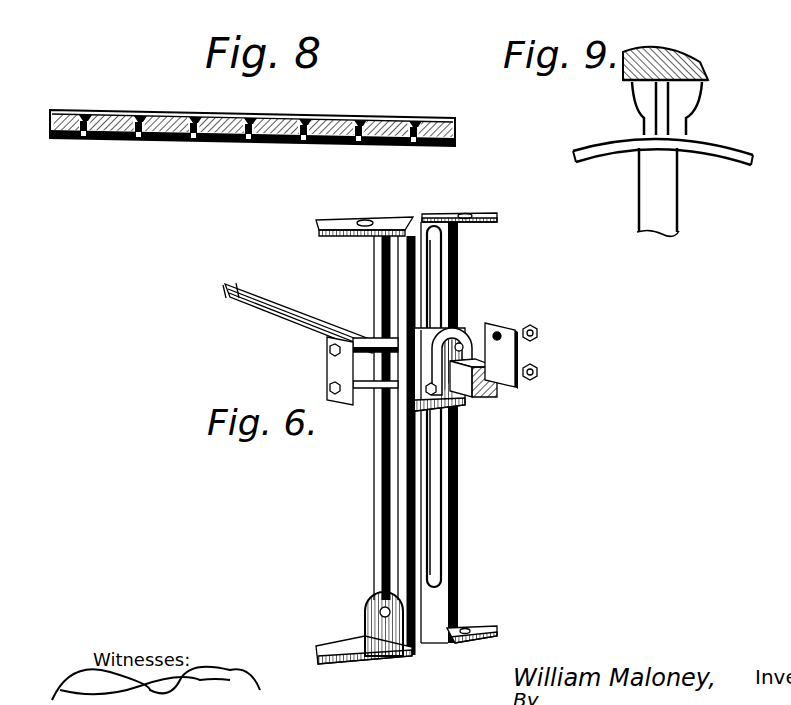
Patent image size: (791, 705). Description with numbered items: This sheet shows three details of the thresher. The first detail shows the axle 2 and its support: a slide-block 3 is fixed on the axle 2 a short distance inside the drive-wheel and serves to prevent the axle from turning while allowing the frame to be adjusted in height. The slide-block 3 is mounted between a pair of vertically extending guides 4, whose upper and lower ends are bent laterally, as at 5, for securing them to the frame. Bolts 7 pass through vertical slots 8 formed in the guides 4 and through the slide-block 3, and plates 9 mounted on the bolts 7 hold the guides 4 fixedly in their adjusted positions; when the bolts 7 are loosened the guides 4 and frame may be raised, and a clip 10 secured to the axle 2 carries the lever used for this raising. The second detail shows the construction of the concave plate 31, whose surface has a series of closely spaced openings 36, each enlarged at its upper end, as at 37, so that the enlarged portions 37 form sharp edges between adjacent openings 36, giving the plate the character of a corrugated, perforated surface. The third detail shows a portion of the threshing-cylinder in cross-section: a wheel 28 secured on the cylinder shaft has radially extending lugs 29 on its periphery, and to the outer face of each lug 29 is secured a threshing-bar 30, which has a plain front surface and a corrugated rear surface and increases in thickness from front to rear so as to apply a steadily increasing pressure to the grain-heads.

In FIG. 6, the axle 2 is at (490, 390).
In FIG. 6, the slide-block 3 is at (428, 330).
In FIG. 6, the guides 4 is at (383, 268).
In FIG. 6, the laterally bent ends 5 is at (380, 218).
In FIG. 6, the bolts 7 is at (368, 328).
In FIG. 6, the vertical slots 8 is at (390, 519).
In FIG. 6, the plates 9 is at (337, 365).
In FIG. 6, the clip 10 is at (470, 335).
In FIG. 9, the wheels 28 is at (658, 166).
In FIG. 9, the radially-extending lugs 29 is at (676, 103).
In FIG. 9, the threshing-bar 30 is at (670, 62).
In FIG. 8, the concave plate 31 is at (95, 156).
In FIG. 8, the openings 36 is at (293, 143).
In FIG. 8, the enlarged portion 37 is at (342, 120).